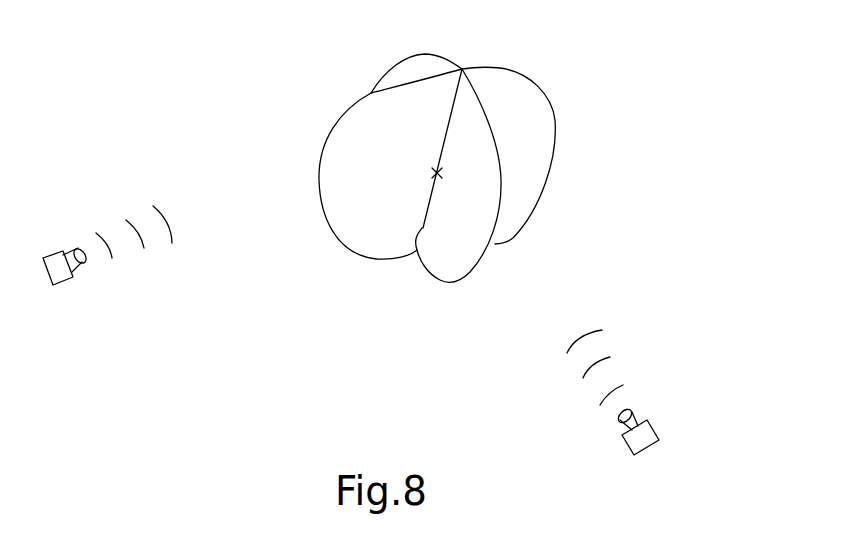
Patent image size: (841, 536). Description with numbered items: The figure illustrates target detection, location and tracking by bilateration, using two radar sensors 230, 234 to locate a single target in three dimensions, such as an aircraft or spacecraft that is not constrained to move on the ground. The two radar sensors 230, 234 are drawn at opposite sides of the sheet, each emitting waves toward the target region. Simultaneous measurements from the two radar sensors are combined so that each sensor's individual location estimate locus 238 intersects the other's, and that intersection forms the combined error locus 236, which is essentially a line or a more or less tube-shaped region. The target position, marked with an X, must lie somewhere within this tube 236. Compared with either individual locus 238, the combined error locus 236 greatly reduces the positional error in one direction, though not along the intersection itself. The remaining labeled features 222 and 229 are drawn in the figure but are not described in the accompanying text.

The second camera / signal receiver 222 is at (657, 435).
The small lobe of signal pattern 229 is at (424, 54).
The radar sensor 230 is at (437, 173).
The radar sensor 234 is at (45, 277).
The combined error locus 236 is at (422, 229).
The individual location estimate locus 238 is at (523, 72).